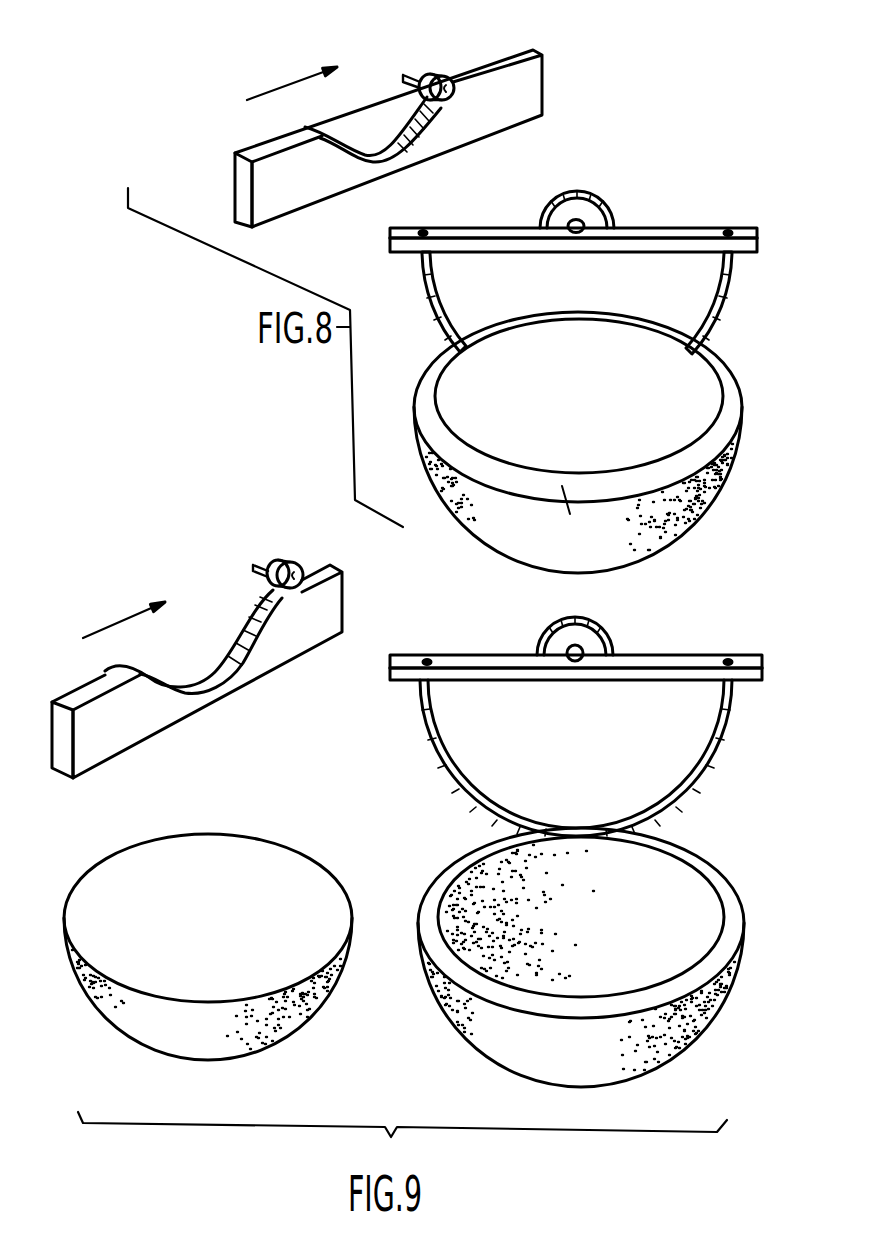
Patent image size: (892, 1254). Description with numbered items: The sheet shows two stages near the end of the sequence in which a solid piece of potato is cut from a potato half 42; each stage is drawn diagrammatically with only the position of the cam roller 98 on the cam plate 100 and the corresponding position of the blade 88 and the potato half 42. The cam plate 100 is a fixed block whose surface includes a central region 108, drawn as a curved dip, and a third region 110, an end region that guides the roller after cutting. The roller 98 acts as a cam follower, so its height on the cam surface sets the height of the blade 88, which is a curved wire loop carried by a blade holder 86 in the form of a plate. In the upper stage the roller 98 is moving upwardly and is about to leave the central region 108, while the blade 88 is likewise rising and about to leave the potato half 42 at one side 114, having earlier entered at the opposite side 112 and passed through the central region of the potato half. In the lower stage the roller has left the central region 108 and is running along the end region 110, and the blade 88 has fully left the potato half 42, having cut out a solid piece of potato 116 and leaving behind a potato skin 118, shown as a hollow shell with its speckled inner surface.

In FIG. 8, the potato half 42 is at (564, 425).
In FIG. 9, the potato half 42 is at (594, 948).
In FIG. 8, the blade holder 86 is at (485, 232).
In FIG. 9, the blade holder 86 is at (677, 662).
In FIG. 8, the blade 88 is at (722, 300).
In FIG. 9, the blade 88 is at (714, 738).
In FIG. 8, the roller 98 is at (440, 74).
In FIG. 9, the roller 98 is at (293, 560).
In FIG. 8, the cam plate 100 is at (247, 193).
In FIG. 9, the cam plate 100 is at (106, 670).
In FIG. 8, the second (central) region 108 is at (387, 147).
In FIG. 9, the second (central) region 108 is at (213, 662).
In FIG. 8, the third region 110 is at (513, 56).
In FIG. 9, the third region 110 is at (331, 569).
In FIG. 8, the side 112 is at (573, 521).
In FIG. 8, the side 114 is at (582, 330).
In FIG. 9, the solid piece of potato 116 is at (135, 861).
In FIG. 9, the potato skin 118 is at (475, 866).